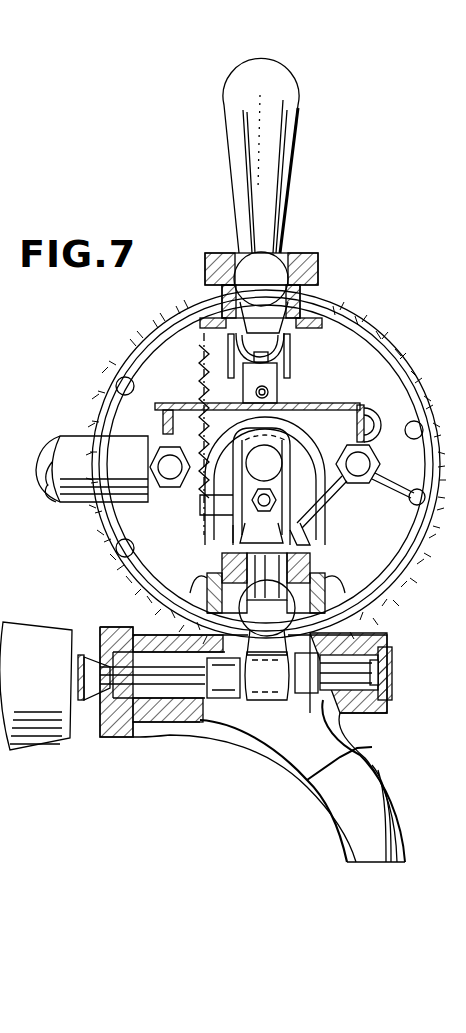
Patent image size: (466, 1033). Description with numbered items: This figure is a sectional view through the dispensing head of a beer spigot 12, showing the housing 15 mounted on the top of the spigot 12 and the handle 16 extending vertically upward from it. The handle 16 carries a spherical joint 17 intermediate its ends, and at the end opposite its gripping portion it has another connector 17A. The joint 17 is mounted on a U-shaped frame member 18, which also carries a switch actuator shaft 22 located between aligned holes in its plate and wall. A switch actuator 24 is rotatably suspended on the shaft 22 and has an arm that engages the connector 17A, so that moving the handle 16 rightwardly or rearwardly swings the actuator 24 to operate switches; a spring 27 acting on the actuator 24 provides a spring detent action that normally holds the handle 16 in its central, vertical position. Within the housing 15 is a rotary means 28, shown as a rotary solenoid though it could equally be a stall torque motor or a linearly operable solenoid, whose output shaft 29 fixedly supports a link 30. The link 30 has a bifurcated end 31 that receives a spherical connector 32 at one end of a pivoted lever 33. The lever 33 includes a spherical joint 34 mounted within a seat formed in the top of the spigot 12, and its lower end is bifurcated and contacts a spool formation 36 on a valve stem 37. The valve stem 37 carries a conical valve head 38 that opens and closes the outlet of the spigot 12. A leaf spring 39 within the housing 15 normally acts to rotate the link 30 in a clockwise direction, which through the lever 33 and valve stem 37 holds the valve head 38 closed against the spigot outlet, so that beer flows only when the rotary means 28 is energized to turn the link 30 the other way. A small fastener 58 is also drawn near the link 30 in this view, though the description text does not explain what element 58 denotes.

The spigot 12 is at (263, 762).
The housing 15 is at (334, 320).
The handle 16 is at (240, 128).
The spherical joint 17 is at (253, 270).
The connector 17A is at (290, 348).
The U-shaped frame member 18 is at (307, 365).
The switch actuator shaft 22 is at (268, 392).
The switch actuator 24 is at (247, 381).
The spring 27 is at (351, 403).
The rotary means 28 is at (309, 440).
The output shaft 29 is at (274, 475).
The link 30 is at (243, 513).
The bifurcated end 31 is at (238, 538).
The spherical connector 32 is at (303, 530).
The pivoted lever 33 is at (296, 568).
The spherical joint 34 is at (280, 620).
The spool formation 36 is at (243, 707).
The valve stem 37 is at (162, 686).
The conical valve head 38 is at (78, 680).
The leaf spring 39 is at (333, 487).
The nut 58 is at (278, 506).